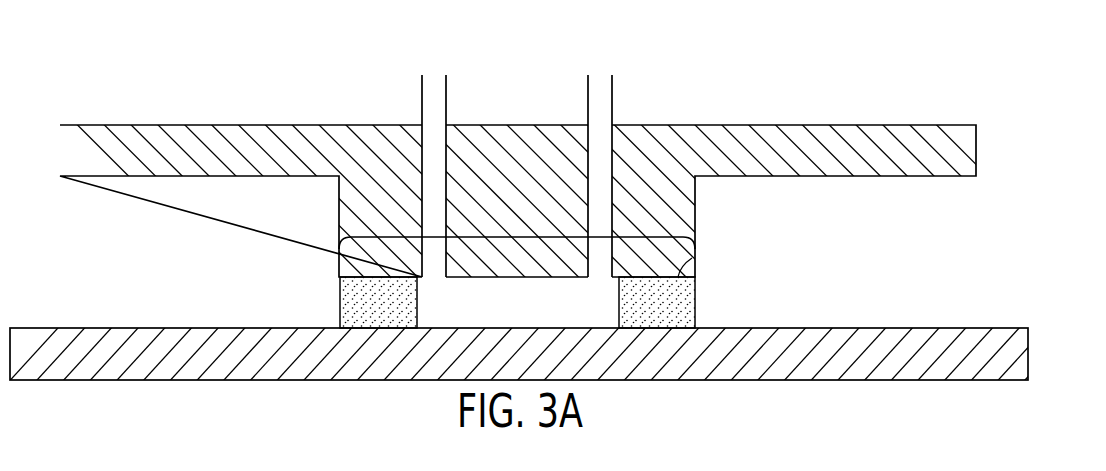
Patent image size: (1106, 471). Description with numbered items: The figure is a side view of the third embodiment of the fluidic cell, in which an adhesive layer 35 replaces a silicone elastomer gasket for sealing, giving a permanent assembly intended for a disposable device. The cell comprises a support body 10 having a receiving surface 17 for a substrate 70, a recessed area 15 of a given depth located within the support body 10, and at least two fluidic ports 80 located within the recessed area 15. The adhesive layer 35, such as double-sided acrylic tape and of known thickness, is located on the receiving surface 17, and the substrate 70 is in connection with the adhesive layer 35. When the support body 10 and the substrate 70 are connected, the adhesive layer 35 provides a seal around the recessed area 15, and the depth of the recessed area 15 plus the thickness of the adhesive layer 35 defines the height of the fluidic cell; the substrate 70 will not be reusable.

The support body 10 is at (960, 153).
The recessed area 15 is at (527, 237).
The receiving surface 17 is at (692, 258).
The adhesive layer 35 is at (683, 308).
The substrate 70 is at (1018, 355).
The fluidic ports 80 is at (435, 82).